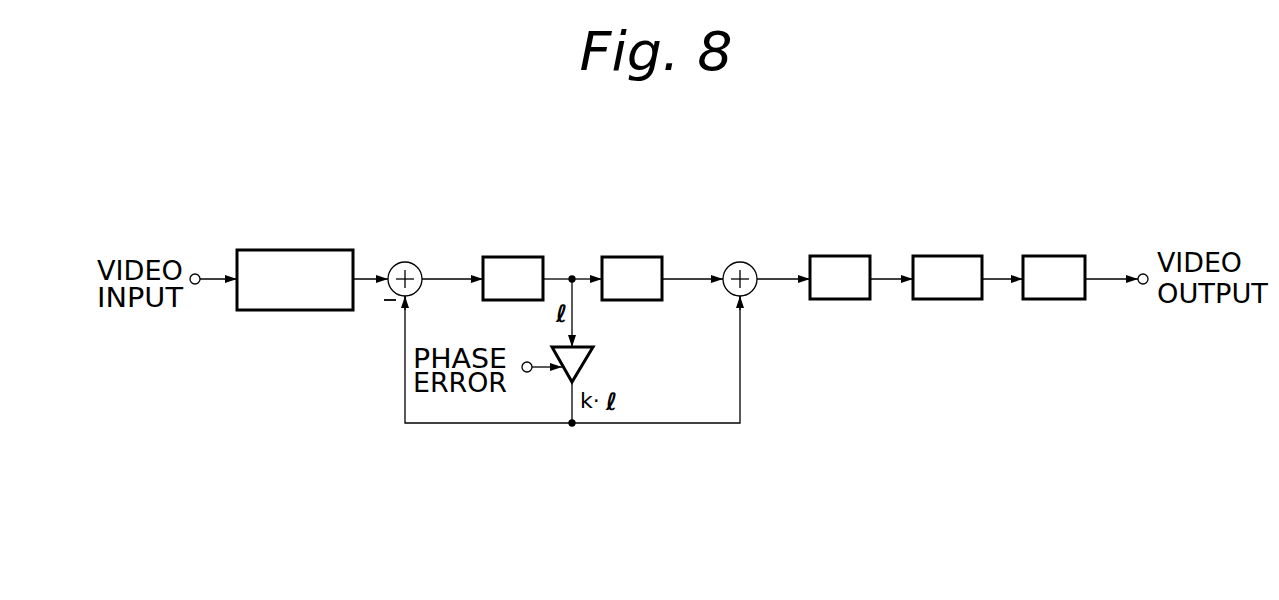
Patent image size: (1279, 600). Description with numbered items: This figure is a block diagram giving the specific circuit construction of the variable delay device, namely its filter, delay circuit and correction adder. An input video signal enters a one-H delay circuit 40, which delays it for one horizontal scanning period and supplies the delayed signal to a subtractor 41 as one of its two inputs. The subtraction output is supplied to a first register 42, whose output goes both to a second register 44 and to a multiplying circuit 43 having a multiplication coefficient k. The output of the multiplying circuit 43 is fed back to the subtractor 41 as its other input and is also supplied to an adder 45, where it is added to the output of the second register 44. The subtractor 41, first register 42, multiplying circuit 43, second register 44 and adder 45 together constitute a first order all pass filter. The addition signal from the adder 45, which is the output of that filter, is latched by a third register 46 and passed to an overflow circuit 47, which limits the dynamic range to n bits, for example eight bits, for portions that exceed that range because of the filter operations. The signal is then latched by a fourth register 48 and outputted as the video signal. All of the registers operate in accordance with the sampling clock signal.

The 1 H delay circuit 40 is at (298, 248).
The subtractor 41 is at (408, 262).
The first register 42 is at (516, 254).
The multiplying circuit 43 is at (593, 357).
The second register 44 is at (638, 254).
The adder 45 is at (742, 262).
The third register 46 is at (845, 254).
The overflow circuit 47 is at (953, 254).
The fourth register 48 is at (1058, 254).